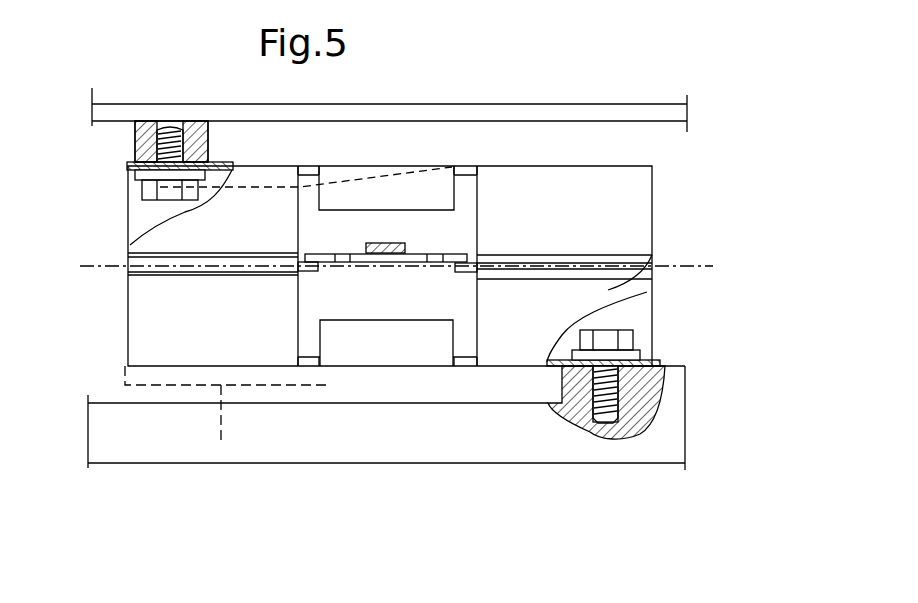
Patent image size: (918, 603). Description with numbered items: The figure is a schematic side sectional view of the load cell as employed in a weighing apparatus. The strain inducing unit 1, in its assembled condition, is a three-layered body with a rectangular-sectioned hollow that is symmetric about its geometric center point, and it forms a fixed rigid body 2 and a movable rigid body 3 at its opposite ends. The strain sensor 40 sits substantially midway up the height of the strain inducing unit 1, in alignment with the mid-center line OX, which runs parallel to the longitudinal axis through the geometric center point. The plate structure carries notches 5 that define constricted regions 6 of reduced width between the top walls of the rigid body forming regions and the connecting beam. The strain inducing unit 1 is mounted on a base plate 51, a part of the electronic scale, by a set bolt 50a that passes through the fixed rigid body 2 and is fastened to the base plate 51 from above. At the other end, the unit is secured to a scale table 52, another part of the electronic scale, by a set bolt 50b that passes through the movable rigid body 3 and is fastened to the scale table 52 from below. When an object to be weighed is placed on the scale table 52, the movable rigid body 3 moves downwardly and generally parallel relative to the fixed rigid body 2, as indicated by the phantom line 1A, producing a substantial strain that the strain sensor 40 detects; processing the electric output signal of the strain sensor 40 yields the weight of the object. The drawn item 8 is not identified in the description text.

The strain inducing unit 1 is at (670, 185).
The phantom line 1A is at (221, 440).
The fixed rigid body 2 is at (652, 255).
The movable rigid body 3 is at (163, 291).
The notches 5 is at (303, 168).
The constricted regions 6 is at (313, 167).
The rail assembly 8 is at (389, 101).
The strain sensor 40 is at (442, 242).
The set bolt 50a is at (603, 343).
The set bolt 50b is at (160, 200).
The base plate 51 is at (383, 430).
The scale table 52 is at (420, 114).
The mid-center line OX is at (705, 262).